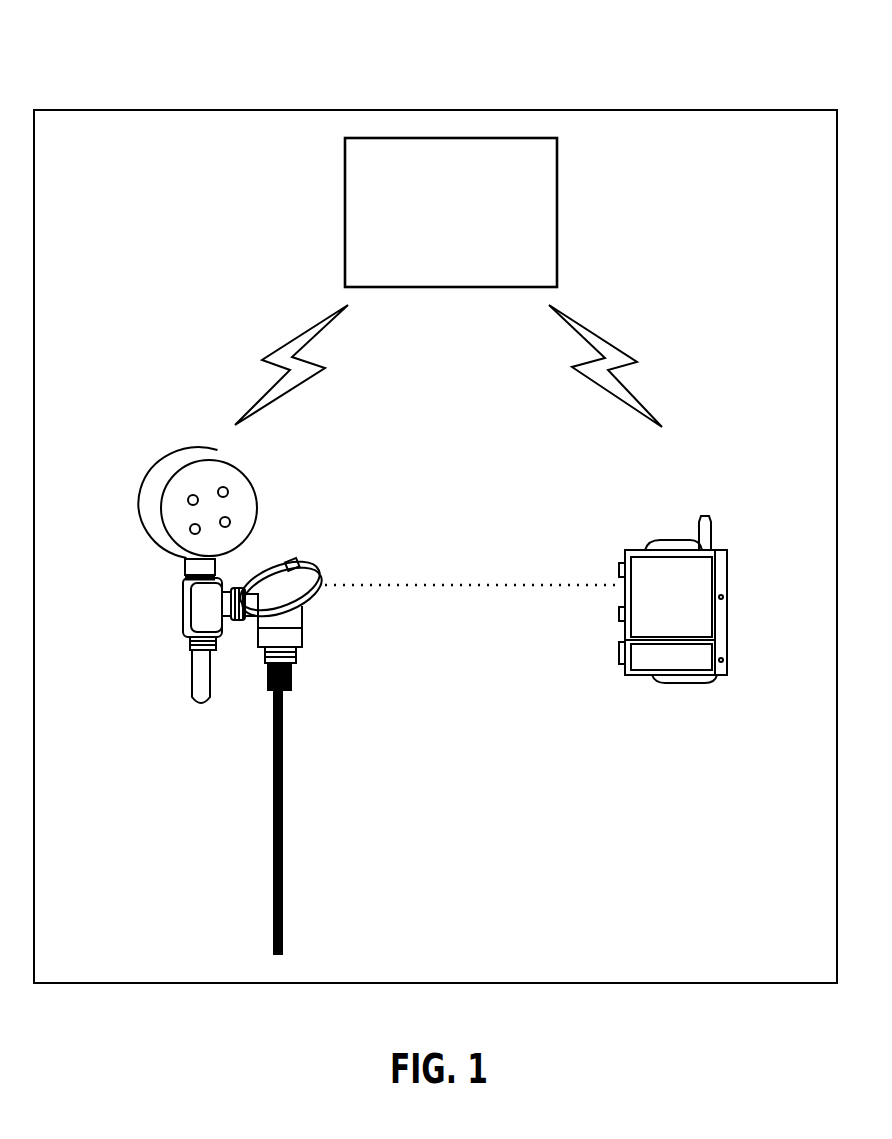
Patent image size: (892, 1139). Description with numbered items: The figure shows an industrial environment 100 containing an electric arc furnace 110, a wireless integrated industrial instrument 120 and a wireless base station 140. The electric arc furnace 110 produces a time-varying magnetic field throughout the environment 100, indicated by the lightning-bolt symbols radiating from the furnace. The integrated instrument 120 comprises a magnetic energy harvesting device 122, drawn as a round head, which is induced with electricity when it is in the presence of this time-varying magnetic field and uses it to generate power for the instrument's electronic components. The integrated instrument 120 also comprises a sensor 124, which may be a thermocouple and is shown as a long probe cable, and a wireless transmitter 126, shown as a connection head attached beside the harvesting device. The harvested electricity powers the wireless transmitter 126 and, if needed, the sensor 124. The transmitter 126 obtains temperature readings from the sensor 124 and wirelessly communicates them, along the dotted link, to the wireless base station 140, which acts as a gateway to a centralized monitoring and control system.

The industrial environment 100 is at (712, 110).
The electric arc furnace 110 is at (480, 247).
The wireless integrated industrial instrument 120 is at (280, 500).
The magnetic energy harvesting device 122 is at (182, 468).
The sensor 124 is at (273, 772).
The wireless transmitter 126 is at (297, 530).
The wireless base station 140 is at (668, 555).